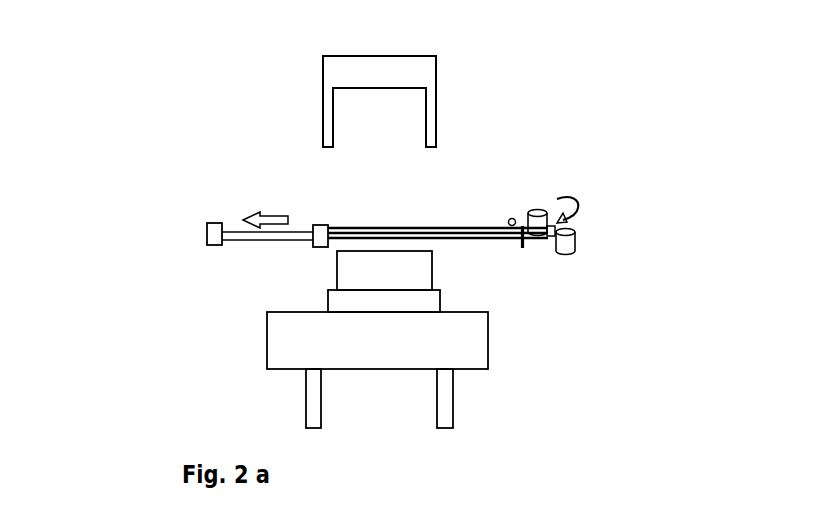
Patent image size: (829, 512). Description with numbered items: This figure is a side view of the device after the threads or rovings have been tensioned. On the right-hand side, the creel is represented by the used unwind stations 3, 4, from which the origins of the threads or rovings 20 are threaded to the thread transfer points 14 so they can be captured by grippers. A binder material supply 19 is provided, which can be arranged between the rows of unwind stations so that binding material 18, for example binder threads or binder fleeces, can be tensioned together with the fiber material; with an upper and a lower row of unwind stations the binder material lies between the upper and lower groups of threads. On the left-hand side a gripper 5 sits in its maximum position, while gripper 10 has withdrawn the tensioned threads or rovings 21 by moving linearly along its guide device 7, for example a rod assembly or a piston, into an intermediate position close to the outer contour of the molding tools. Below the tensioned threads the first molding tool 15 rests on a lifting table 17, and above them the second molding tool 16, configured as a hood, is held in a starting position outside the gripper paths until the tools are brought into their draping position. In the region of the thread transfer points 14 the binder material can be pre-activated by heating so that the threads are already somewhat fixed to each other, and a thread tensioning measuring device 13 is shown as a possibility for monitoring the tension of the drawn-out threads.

The unwind station 3 is at (582, 242).
The unwind station 4 is at (537, 210).
The gripper 5 is at (207, 234).
The guide device 7 is at (230, 227).
The gripper 10 is at (316, 225).
The thread tensioning measuring device 13 is at (512, 218).
The thread transfer point 14 is at (522, 248).
The first molding tool 15 is at (333, 262).
The second molding tool 16 is at (322, 72).
The lifting table 17 is at (266, 332).
The binding material 18 is at (493, 228).
The binder material supply 19 is at (579, 209).
The threads or rovings 20 is at (540, 245).
The tensioned threads or rovings 21 is at (458, 228).